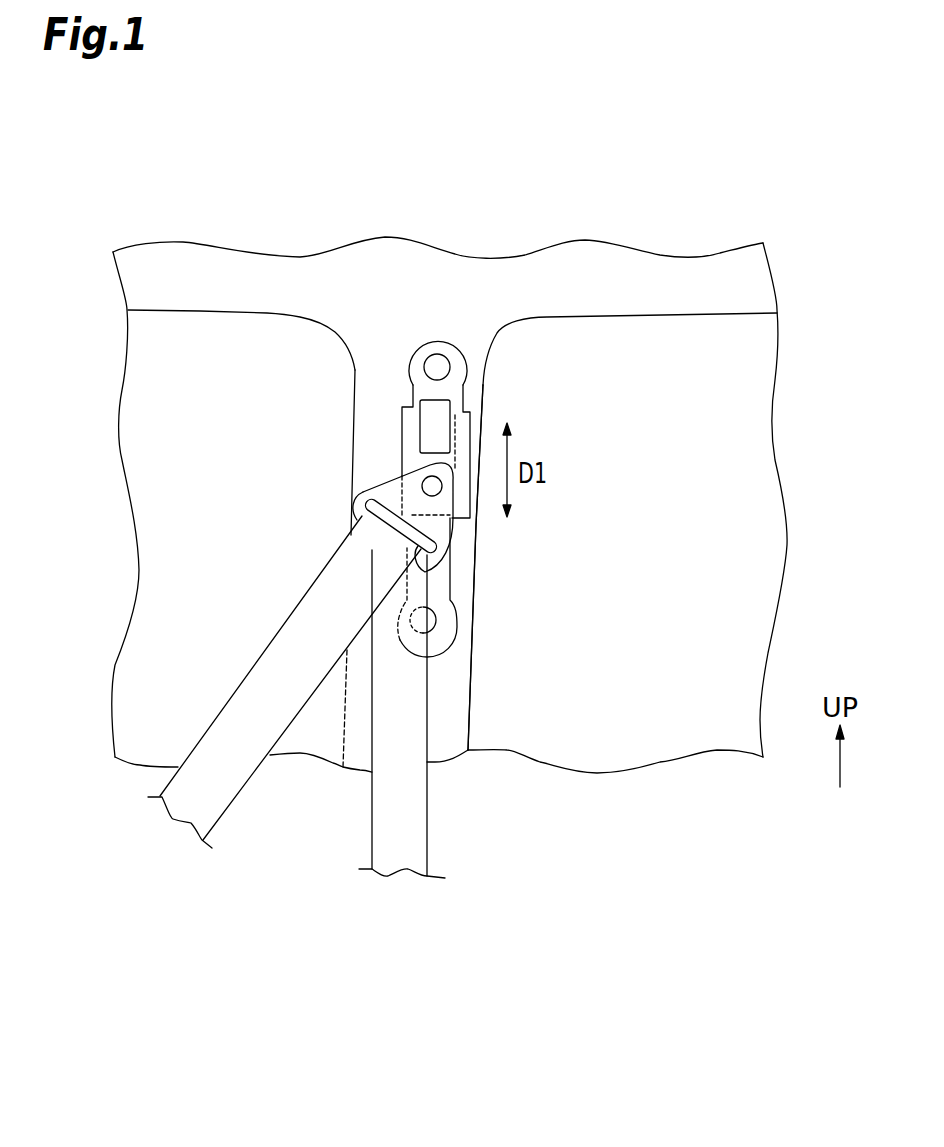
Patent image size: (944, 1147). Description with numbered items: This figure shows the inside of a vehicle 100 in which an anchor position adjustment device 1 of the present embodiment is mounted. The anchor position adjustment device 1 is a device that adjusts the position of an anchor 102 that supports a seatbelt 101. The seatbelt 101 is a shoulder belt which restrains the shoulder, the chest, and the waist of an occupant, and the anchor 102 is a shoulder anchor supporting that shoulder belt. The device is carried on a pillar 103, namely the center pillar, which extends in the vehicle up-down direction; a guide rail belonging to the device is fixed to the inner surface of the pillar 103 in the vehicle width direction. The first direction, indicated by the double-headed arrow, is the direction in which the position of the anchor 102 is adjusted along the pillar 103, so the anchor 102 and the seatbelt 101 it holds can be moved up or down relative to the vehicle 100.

The vehicle 100 is at (748, 204).
The anchor position adjustment device 1 is at (476, 360).
The seatbelt 101 is at (234, 804).
The anchor 102 is at (374, 493).
The pillar 103 is at (473, 672).